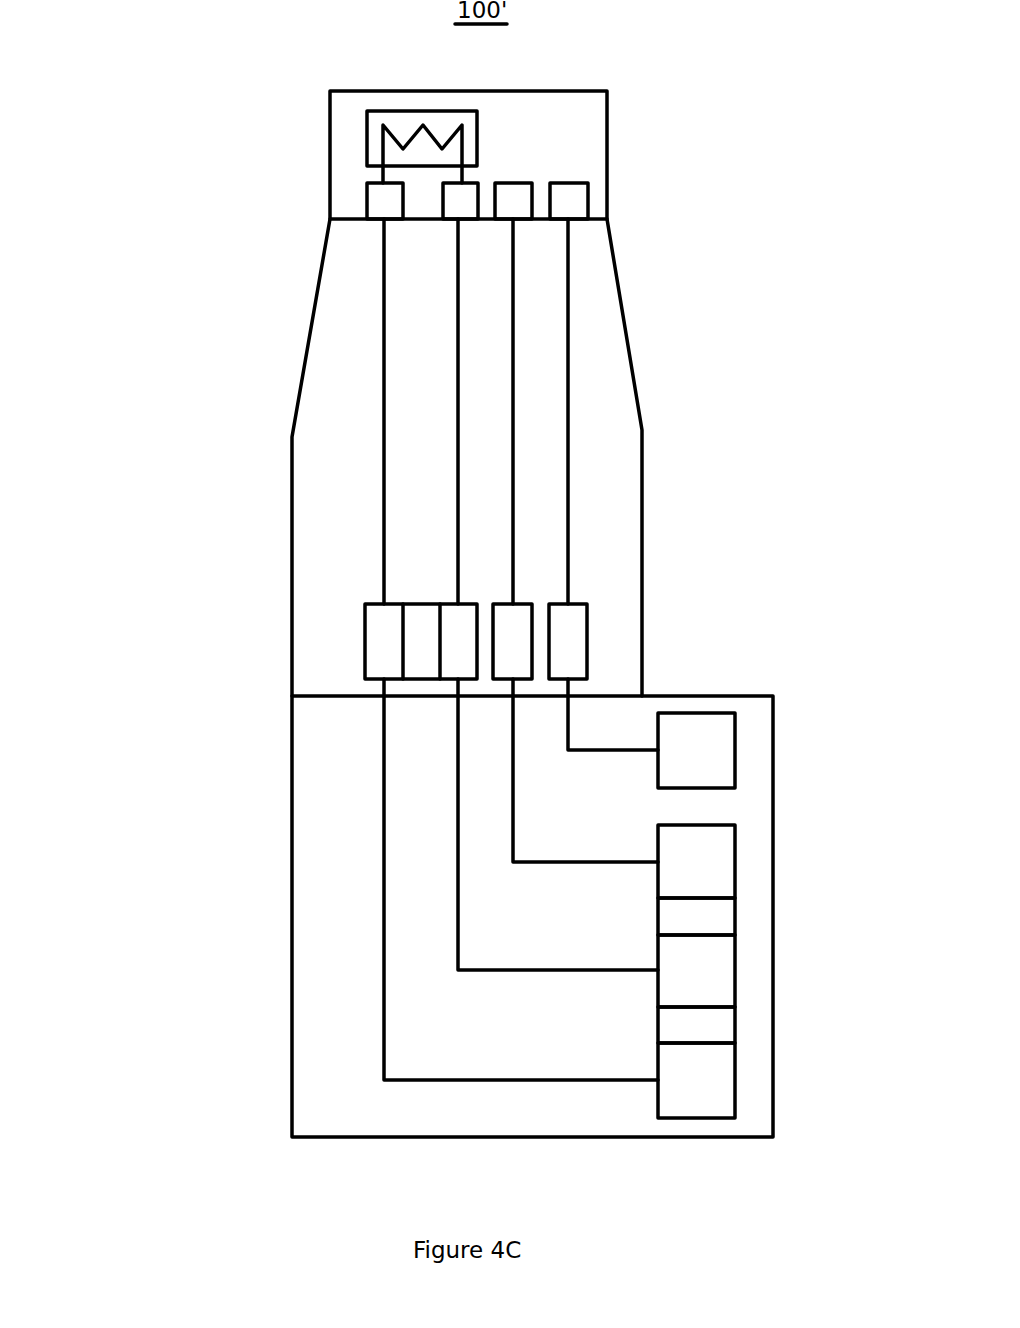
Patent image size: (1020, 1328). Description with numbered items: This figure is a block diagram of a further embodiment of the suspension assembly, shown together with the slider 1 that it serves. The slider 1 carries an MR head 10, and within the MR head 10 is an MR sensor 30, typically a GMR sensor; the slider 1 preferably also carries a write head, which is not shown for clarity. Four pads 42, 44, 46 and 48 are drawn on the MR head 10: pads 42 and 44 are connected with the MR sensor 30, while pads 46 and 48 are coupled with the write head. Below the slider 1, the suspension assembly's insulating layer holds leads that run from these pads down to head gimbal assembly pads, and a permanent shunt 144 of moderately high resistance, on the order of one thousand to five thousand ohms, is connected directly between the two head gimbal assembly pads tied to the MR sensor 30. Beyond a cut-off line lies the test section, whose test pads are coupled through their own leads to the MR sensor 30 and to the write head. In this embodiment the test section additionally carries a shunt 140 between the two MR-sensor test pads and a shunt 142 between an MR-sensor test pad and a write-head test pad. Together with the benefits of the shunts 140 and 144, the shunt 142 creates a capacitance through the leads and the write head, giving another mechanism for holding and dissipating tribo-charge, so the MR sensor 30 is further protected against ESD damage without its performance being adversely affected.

The slider 1 is at (587, 92).
The MR head 10 is at (441, 111).
The MR sensor 30 is at (383, 146).
The pad 42 is at (367, 200).
The pad 44 is at (480, 183).
The pad 46 is at (533, 183).
The pad 48 is at (588, 200).
The shunt 140 is at (735, 1025).
The shunt 142 is at (735, 915).
The permanent shunt 144 is at (419, 604).